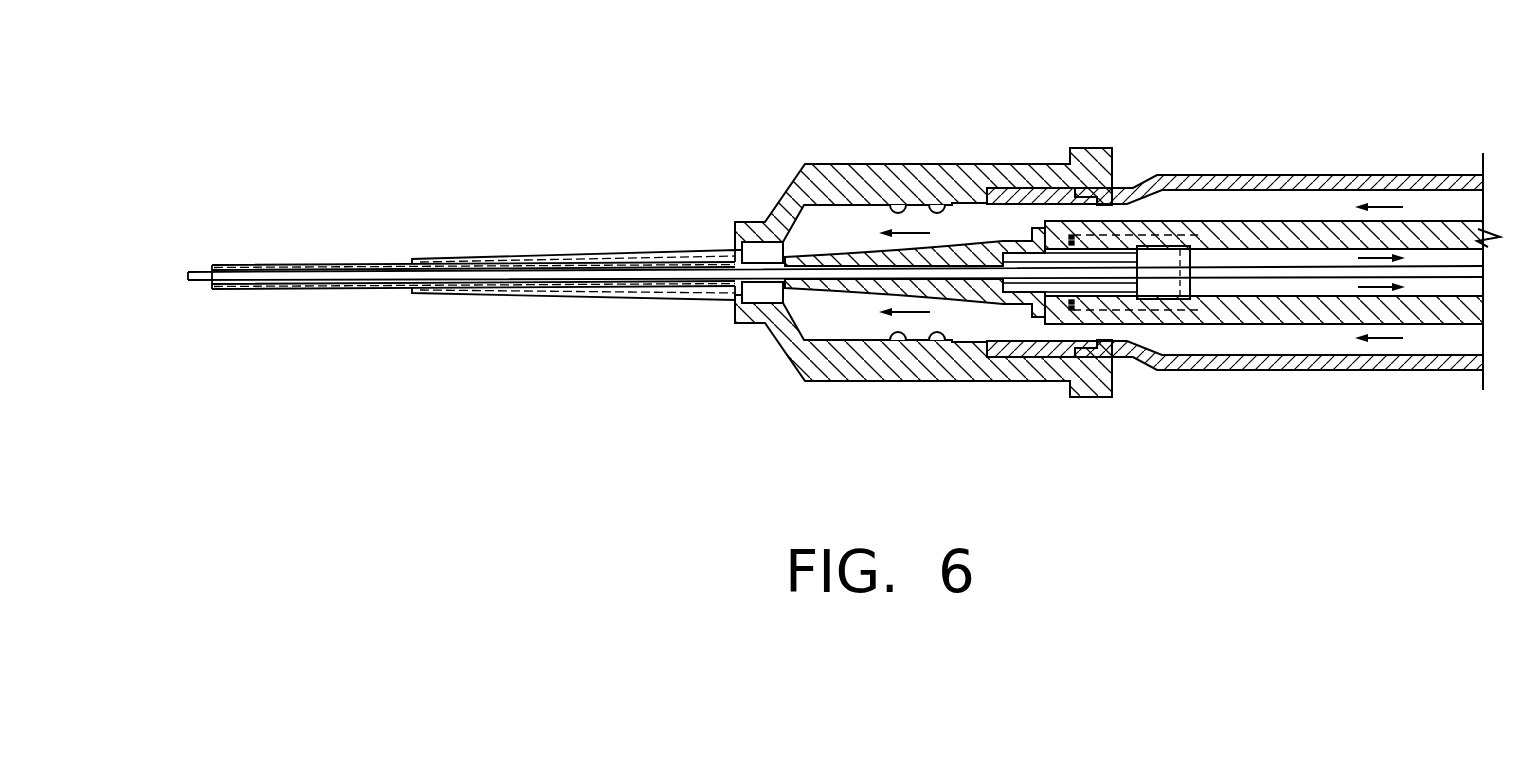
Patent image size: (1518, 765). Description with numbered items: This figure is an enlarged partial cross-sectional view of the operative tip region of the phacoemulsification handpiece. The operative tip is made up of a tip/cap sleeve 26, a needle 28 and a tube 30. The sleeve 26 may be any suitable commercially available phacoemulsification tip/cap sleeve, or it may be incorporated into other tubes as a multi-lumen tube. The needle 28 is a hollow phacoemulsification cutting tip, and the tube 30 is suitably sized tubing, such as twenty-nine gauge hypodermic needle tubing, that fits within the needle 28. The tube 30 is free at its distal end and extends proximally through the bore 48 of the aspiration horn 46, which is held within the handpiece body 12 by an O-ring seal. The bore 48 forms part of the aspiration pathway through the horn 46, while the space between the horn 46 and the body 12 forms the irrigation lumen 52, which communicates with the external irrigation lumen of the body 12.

The handpiece body 12 is at (1375, 165).
The tip/cap sleeve 26 is at (821, 156).
The needle 28 is at (312, 263).
The tube 30 is at (192, 289).
The aspiration horn 46 is at (1240, 335).
The bore 48 is at (1273, 260).
The irrigation lumen 52 is at (843, 230).